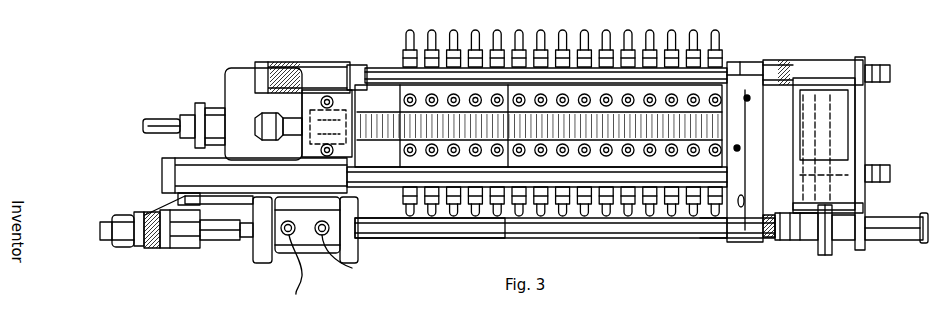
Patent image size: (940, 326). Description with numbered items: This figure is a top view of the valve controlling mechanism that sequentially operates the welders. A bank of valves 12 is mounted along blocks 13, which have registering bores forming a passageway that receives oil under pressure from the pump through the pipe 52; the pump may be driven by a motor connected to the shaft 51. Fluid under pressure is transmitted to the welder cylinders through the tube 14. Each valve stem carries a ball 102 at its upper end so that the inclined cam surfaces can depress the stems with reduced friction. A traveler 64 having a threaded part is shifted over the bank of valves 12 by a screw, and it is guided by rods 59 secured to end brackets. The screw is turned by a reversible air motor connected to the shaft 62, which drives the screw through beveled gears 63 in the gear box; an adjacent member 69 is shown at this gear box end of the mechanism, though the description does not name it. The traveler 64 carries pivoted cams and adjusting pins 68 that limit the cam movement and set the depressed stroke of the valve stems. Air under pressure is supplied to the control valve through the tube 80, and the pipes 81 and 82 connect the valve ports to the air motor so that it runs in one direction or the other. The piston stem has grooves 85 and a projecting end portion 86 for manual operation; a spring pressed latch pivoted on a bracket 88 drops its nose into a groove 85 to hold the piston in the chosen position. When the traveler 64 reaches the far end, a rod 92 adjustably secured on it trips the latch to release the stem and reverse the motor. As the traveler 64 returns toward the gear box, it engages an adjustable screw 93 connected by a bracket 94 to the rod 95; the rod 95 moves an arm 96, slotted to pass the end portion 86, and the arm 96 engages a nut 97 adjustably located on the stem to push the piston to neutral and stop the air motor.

The valves 12 is at (585, 97).
The blocks 13 is at (531, 93).
The tube 14 is at (493, 40).
The shaft 51 is at (152, 119).
The pipe 52 is at (268, 132).
The rods 59 is at (692, 62).
The shaft 62 is at (822, 253).
The beveled gears 63 is at (813, 148).
The traveler 64 is at (738, 88).
The adjusting pins 68 is at (747, 98).
The shaft 69 is at (757, 163).
The tube 80 is at (300, 293).
The pipe 81 is at (300, 272).
The pipe 82 is at (353, 268).
The grooves 85 is at (247, 242).
The projecting end portion 86 is at (100, 225).
The bracket 88 is at (186, 250).
The rod 92 is at (656, 236).
The adjustable screw 93 is at (798, 233).
The bracket 94 is at (838, 232).
The rod 95 is at (907, 238).
The arm 96 is at (118, 220).
The nut 97 is at (137, 222).
The balls 102 is at (650, 97).